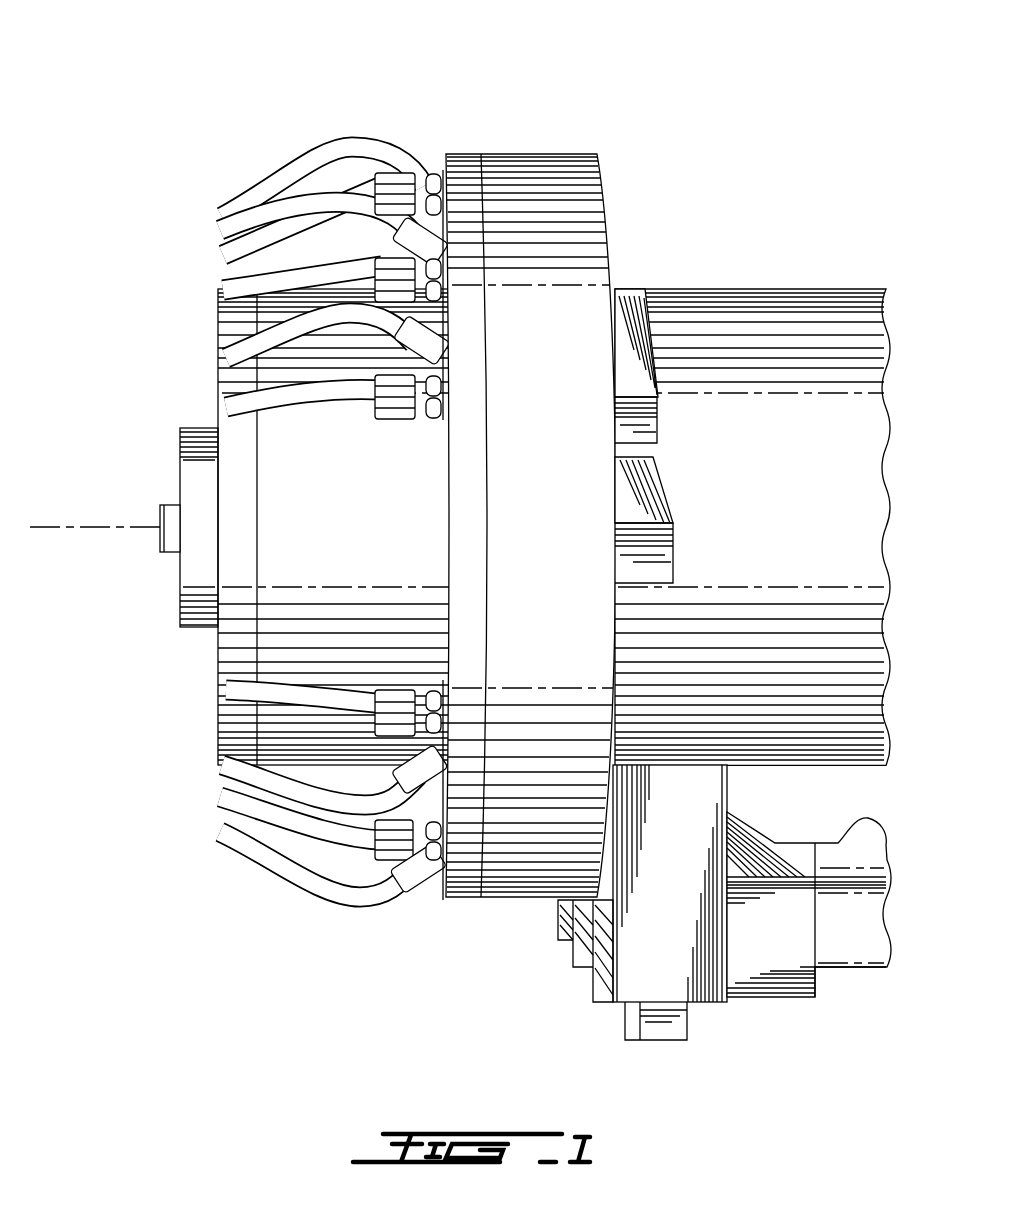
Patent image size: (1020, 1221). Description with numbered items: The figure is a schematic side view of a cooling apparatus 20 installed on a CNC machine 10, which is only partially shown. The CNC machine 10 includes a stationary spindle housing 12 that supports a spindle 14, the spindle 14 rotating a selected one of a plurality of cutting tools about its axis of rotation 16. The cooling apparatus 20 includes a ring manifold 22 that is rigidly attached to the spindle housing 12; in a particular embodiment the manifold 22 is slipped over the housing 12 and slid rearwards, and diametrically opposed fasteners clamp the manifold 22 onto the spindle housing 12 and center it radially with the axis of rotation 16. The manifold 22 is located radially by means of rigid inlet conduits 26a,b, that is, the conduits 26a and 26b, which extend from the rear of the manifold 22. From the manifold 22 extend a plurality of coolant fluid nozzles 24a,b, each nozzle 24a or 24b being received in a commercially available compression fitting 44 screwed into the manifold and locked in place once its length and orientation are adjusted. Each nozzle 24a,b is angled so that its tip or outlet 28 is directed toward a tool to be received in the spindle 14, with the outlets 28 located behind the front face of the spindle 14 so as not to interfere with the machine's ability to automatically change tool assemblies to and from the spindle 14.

The CNC machine 10 is at (727, 612).
The spindle housing 12 is at (818, 318).
The spindle 14 is at (196, 583).
The axis of rotation 16 is at (76, 526).
The cooling apparatus 20 is at (570, 460).
The ring manifold 22 is at (568, 216).
The coolant fluid nozzles 24a,b is at (261, 477).
The coolant fluid nozzle 24a is at (261, 477).
The coolant fluid nozzle 24b is at (261, 477).
The rigid inlet conduits 26a,b is at (809, 946).
The rigid inlet conduit 26a is at (809, 946).
The rigid inlet conduit 26b is at (848, 937).
The outlets 28 is at (218, 316).
The compression fittings 44 is at (400, 815).